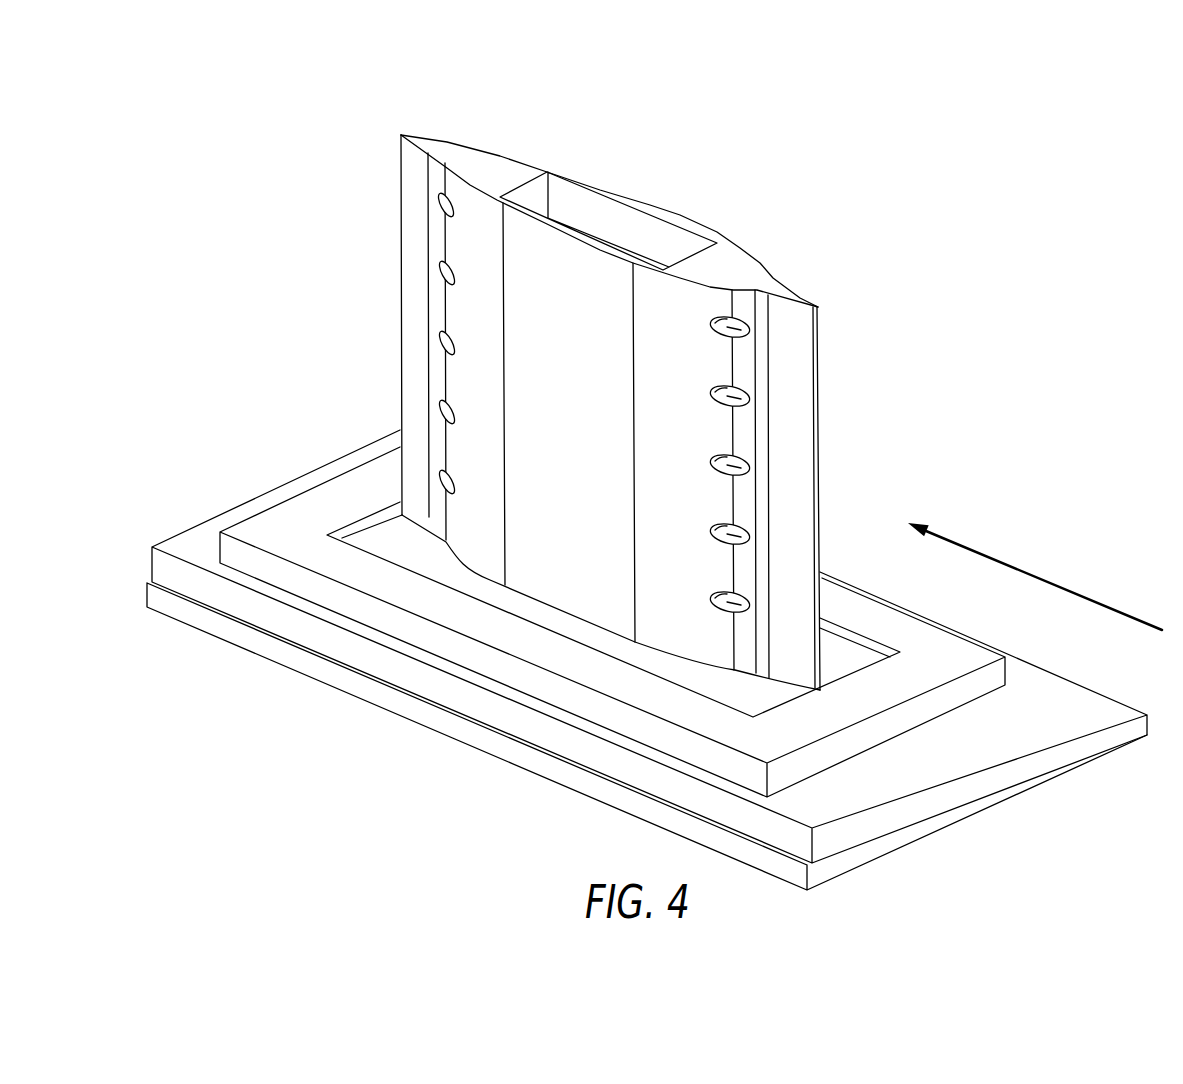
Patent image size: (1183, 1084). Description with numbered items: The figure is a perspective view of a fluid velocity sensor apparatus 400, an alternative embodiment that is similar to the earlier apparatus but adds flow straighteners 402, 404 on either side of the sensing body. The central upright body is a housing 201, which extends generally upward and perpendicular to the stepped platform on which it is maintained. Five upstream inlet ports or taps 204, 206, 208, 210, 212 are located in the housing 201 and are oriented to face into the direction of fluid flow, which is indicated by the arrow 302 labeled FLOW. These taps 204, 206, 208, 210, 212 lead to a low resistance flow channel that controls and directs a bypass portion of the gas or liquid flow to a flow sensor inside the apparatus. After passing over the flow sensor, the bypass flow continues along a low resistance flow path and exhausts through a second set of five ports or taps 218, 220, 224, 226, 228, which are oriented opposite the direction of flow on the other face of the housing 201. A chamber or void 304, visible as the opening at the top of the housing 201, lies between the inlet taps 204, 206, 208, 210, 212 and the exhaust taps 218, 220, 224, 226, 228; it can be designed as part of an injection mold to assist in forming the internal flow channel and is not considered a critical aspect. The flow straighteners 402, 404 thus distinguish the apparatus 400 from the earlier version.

The fluid velocity sensor apparatus 400 is at (870, 210).
The flow straightener 402 is at (798, 358).
The flow straightener 404 is at (412, 172).
The housing 201 is at (735, 263).
The chamber 304 is at (616, 217).
The upstream tap 204 is at (750, 333).
The upstream tap 206 is at (750, 402).
The upstream tap 208 is at (750, 471).
The upstream tap 210 is at (750, 539).
The upstream tap 212 is at (753, 606).
The exhaust tap 218 is at (440, 209).
The exhaust tap 220 is at (440, 277).
The exhaust tap 224 is at (440, 347).
The exhaust tap 226 is at (440, 415).
The exhaust tap 228 is at (440, 484).
The arrow 302 is at (1027, 574).